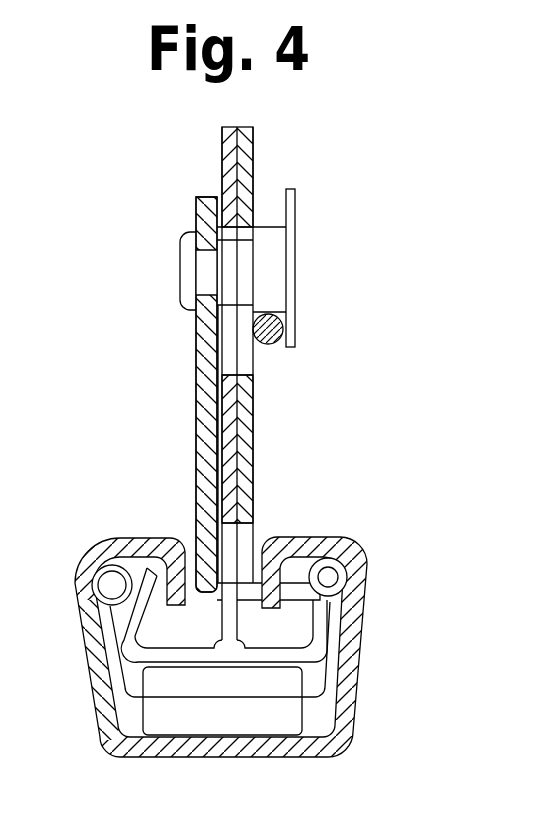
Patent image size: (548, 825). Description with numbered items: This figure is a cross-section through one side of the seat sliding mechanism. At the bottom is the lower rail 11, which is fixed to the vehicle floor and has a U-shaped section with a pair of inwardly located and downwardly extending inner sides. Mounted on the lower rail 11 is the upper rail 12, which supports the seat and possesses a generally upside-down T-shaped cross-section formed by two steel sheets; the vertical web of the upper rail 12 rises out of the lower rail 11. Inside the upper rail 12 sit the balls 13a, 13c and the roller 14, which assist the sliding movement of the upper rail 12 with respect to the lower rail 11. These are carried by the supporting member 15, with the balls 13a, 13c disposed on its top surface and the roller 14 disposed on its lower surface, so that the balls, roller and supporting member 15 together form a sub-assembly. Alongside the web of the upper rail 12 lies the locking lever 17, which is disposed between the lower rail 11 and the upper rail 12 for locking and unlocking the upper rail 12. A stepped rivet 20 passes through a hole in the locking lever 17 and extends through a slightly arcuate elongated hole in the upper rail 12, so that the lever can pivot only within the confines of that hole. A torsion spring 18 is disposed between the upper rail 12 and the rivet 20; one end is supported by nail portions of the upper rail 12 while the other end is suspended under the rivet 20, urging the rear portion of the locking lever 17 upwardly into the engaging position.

The lower rail 11 is at (366, 562).
The upper rail 12 is at (260, 546).
The ball 13a is at (113, 580).
The ball 13c is at (335, 578).
The roller 14 is at (283, 717).
The supporting member 15 is at (330, 664).
The locking lever 17 is at (205, 392).
The torsion spring 18 is at (276, 349).
The stepped rivet 20 is at (292, 262).